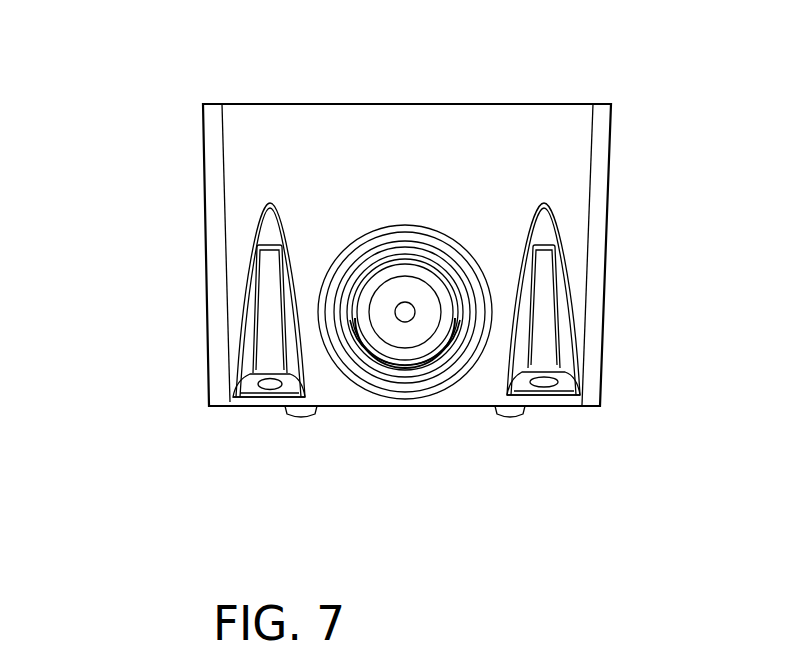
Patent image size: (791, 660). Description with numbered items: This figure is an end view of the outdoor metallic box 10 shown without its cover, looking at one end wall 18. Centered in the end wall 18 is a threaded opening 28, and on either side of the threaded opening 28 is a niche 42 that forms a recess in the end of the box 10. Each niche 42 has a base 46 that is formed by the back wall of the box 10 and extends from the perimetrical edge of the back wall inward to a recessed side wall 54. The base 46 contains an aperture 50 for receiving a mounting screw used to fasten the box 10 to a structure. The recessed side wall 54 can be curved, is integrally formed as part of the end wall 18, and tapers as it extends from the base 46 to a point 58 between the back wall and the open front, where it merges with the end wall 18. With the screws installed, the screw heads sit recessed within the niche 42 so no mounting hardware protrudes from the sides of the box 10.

The box 10 is at (317, 88).
The end wall 18 is at (532, 148).
The threaded opening 28 is at (398, 335).
The niche 42 is at (242, 290).
The base 46 is at (243, 397).
The aperture 50 is at (262, 390).
The recessed side wall 54 is at (240, 347).
The point 58 is at (270, 205).